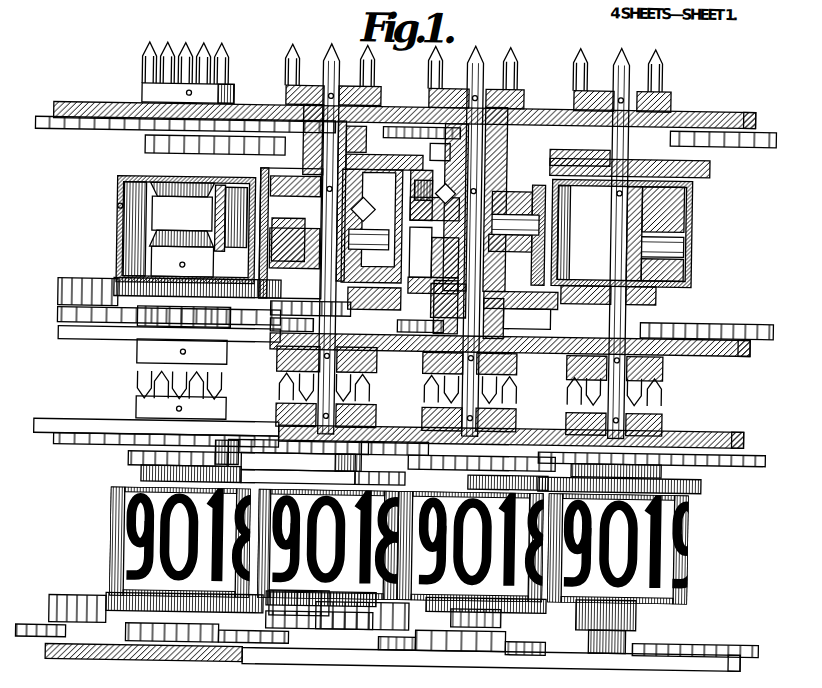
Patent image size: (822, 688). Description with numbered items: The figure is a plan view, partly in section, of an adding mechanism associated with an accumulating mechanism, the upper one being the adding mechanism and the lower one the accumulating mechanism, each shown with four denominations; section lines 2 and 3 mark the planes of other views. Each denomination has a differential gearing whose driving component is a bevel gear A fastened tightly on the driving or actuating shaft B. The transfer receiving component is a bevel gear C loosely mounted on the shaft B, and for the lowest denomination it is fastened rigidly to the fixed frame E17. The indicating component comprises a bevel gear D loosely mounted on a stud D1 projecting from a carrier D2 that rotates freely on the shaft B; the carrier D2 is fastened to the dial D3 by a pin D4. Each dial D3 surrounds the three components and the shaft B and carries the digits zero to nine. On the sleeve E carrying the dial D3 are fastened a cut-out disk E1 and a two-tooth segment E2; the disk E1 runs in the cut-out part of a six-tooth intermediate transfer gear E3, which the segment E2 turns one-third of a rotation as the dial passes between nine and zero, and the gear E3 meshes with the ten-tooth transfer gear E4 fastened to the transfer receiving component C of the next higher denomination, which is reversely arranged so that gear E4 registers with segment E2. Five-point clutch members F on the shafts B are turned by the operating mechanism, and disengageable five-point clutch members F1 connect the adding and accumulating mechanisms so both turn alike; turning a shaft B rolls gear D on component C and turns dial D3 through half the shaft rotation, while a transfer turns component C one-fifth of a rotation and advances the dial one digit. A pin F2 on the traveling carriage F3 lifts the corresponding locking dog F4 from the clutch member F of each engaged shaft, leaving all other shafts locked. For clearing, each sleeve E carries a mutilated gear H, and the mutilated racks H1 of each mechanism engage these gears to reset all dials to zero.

The section line 2- 2 is at (82, 136).
The section line 3- 3 is at (82, 79).
The bevel gear A is at (349, 229).
The driving or actuating shaft B is at (475, 222).
The bevel gear C is at (158, 165).
The bevel gear D is at (449, 227).
The stud D1 is at (703, 243).
The carrier D2 is at (428, 182).
The dial D3 is at (118, 242).
The pin D4 is at (112, 211).
The sleeve E is at (640, 157).
The cut-out disk E1 is at (352, 130).
The two-tooth segment E2 is at (266, 145).
The six-tooth intermediate transfer gear E3 is at (60, 290).
The ten-tooth transfer gear E4 is at (142, 146).
The fixed frame E17 is at (748, 118).
The five-point clutch member F is at (140, 66).
The disengageable five-point clutch member F1 is at (138, 380).
The pin F2 is at (480, 650).
The traveling carriage F3 is at (232, 110).
The locking dog F4 is at (280, 350).
The mutilated gear H is at (372, 125).
The mutilated rack H1 is at (45, 125).